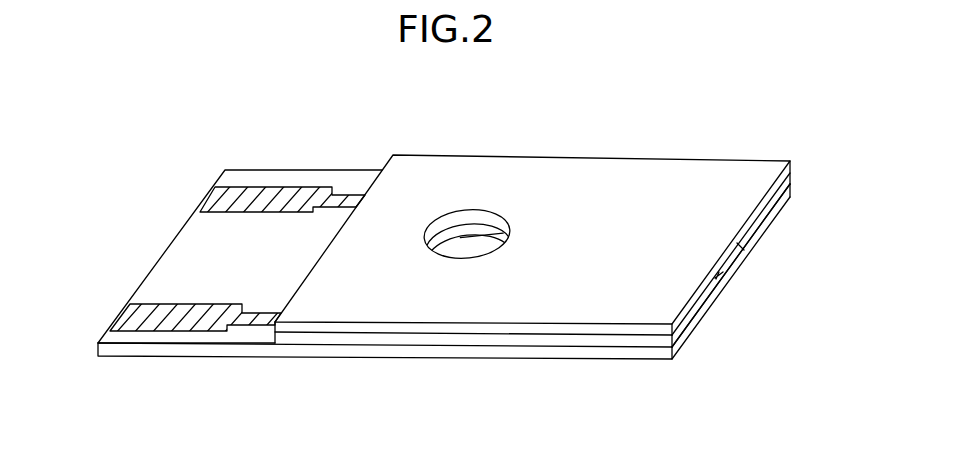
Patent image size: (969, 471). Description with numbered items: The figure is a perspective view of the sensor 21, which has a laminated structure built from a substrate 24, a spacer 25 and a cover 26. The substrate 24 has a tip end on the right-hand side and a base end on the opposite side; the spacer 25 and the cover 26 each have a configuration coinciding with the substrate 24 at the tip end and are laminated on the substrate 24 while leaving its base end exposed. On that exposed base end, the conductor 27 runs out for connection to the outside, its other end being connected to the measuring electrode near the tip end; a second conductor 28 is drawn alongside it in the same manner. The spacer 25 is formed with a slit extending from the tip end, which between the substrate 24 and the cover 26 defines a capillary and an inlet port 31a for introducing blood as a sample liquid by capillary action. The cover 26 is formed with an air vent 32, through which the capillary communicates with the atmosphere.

The sensor 21 is at (648, 140).
The substrate 24 is at (131, 358).
The spacer 25 is at (310, 335).
The cover 26 is at (582, 303).
The conductor 27 is at (136, 320).
The electrode lead 28 is at (224, 203).
The inlet port 31a is at (723, 272).
The air vent 32 is at (465, 245).